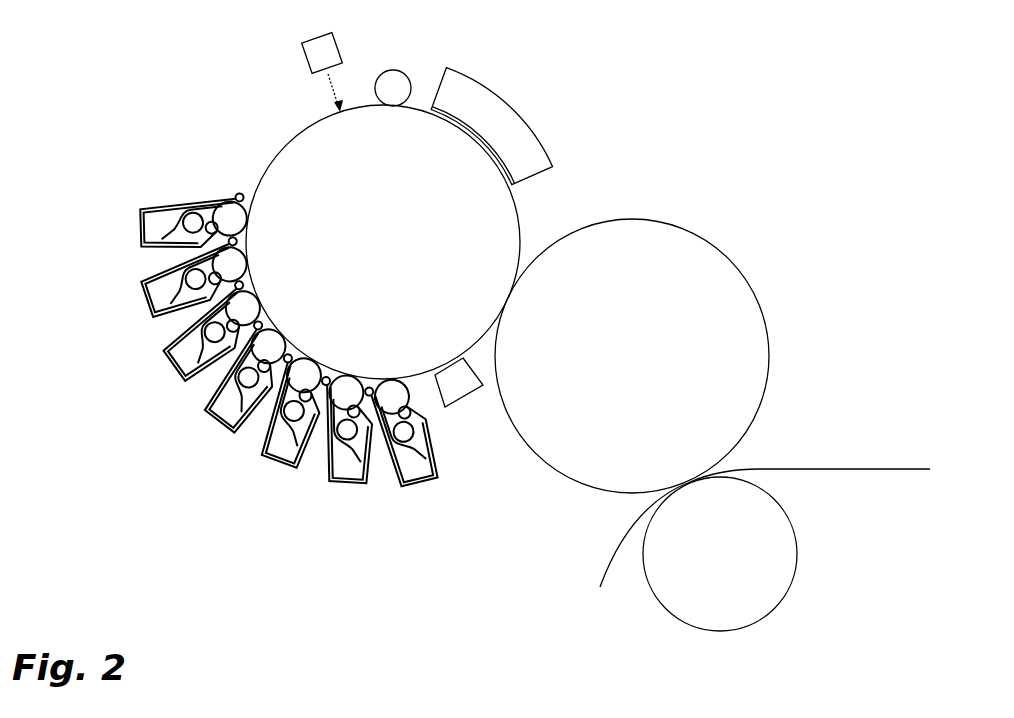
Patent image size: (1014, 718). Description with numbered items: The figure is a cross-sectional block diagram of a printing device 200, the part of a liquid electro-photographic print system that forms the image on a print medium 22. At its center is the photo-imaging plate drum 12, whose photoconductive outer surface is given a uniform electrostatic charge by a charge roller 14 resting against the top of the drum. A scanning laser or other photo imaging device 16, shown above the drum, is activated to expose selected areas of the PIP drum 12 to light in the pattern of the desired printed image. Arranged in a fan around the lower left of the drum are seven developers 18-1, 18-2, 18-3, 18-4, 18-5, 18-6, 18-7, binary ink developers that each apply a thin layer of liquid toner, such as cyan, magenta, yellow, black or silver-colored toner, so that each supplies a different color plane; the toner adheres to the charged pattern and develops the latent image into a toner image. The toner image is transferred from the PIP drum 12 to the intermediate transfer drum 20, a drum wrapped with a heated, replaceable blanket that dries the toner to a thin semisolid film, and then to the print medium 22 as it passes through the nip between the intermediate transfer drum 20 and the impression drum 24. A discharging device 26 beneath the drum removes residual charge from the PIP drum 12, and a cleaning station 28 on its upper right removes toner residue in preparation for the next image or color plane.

The printing device 200 is at (86, 70).
The photo-imaging plate drum 12 is at (453, 220).
The charge roller 14 is at (395, 80).
The photo imaging device 16 is at (312, 52).
The cleaning station 28 is at (518, 147).
The discharging device 26 is at (455, 392).
The intermediate transfer drum 20 is at (673, 262).
The print medium 22 is at (808, 468).
The impression drum 24 is at (768, 540).
The developer 18-1 is at (420, 485).
The developer 18-2 is at (350, 486).
The developer 18-3 is at (272, 470).
The developer 18-4 is at (214, 426).
The developer 18-5 is at (174, 370).
The developer 18-6 is at (146, 312).
The developer 18-7 is at (145, 243).